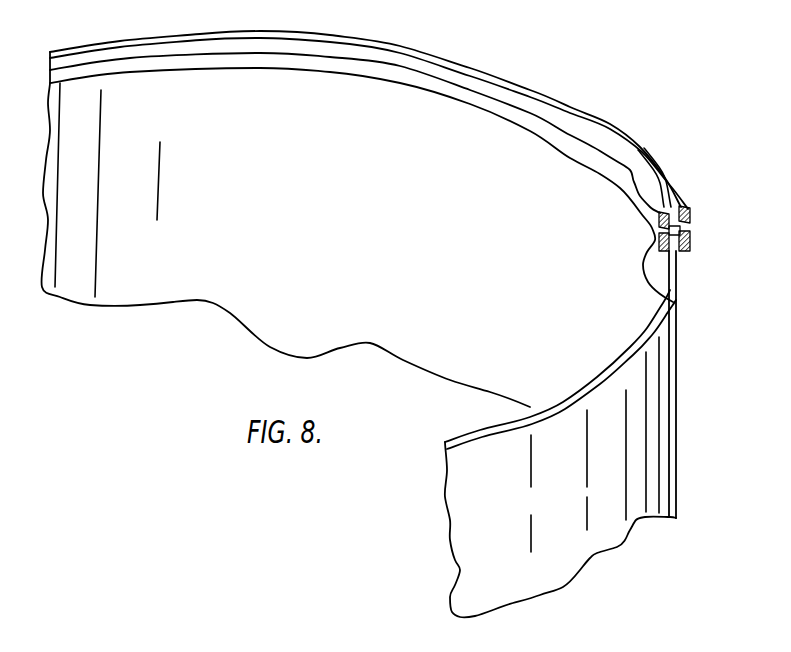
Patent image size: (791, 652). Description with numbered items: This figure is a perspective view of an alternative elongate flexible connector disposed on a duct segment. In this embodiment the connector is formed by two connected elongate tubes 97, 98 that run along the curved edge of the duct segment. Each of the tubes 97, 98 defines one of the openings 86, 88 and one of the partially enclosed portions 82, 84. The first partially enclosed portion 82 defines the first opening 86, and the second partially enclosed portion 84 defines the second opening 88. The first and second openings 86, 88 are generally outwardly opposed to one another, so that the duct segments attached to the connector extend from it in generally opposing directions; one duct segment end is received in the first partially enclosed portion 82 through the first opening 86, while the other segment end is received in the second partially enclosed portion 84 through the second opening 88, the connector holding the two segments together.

The first partially enclosed portion 82 is at (673, 302).
The second partially enclosed portion 84 is at (637, 169).
The first opening 86 is at (680, 288).
The second opening 88 is at (667, 186).
The elongate tube 97 is at (692, 244).
The elongate tube 98 is at (690, 216).